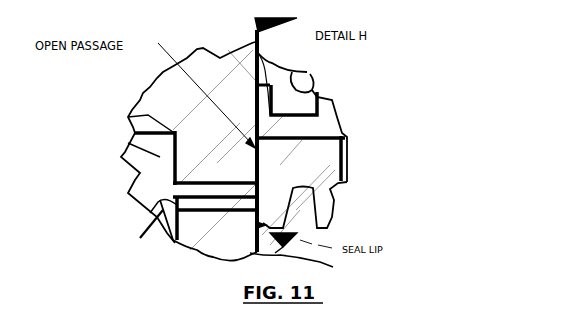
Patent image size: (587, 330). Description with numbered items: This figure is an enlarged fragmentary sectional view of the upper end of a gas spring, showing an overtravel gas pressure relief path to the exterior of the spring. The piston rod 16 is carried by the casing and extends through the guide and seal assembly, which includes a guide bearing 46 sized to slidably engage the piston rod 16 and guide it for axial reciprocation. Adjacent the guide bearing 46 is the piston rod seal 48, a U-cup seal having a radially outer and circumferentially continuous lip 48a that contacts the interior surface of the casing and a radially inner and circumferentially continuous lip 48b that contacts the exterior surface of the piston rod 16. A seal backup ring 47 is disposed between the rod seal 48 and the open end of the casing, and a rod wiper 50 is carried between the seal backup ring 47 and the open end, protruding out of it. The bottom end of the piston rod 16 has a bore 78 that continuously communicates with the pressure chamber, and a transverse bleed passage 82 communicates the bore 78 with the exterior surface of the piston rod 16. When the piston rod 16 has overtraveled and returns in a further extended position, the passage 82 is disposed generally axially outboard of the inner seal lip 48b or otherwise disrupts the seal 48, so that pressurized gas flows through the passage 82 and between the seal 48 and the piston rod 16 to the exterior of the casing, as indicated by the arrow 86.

The piston rod 16 is at (130, 90).
The bore 78 is at (128, 145).
The arrow 86 is at (152, 215).
The transverse bleed passage 82 is at (205, 208).
The rod wiper 50 is at (307, 72).
The seal backup ring 47 is at (337, 115).
The piston rod seal 48 is at (342, 188).
The radially outer lip 48a is at (317, 234).
The radially inner lip 48b is at (285, 247).
The guide bearing 46 is at (277, 253).